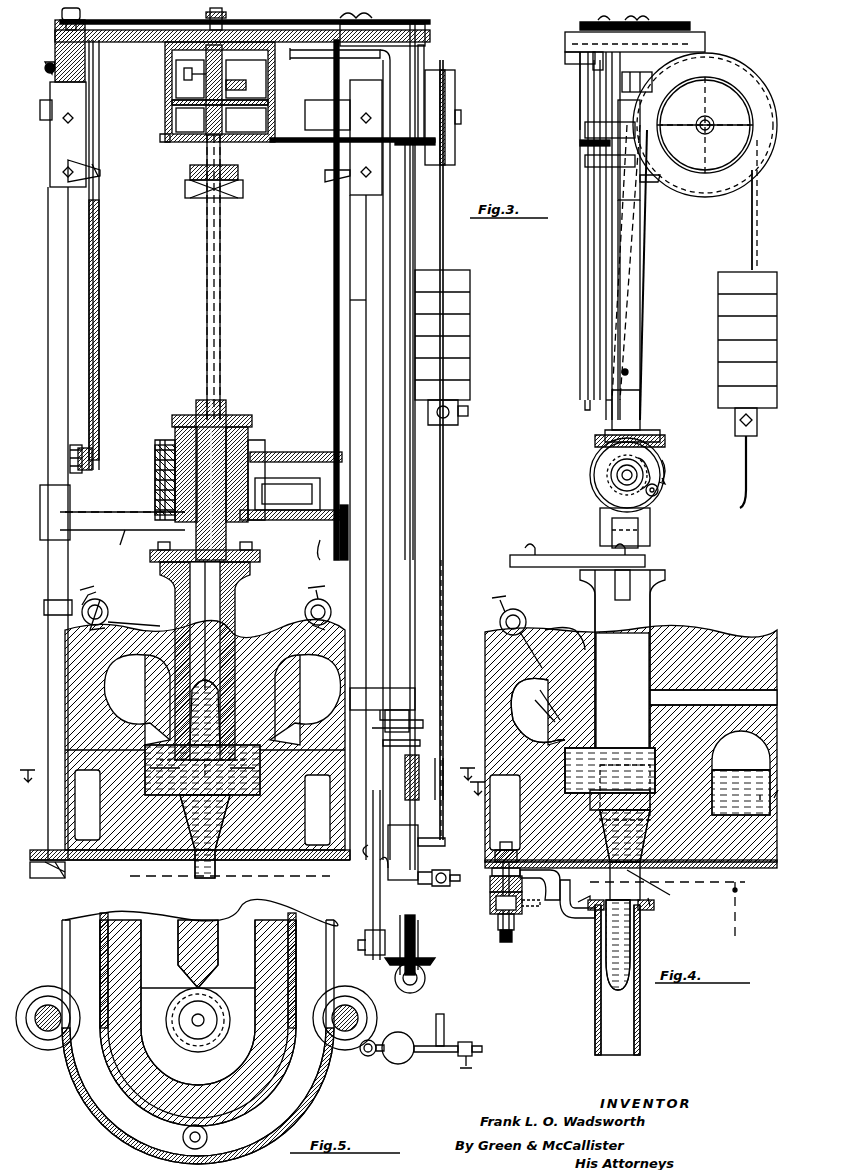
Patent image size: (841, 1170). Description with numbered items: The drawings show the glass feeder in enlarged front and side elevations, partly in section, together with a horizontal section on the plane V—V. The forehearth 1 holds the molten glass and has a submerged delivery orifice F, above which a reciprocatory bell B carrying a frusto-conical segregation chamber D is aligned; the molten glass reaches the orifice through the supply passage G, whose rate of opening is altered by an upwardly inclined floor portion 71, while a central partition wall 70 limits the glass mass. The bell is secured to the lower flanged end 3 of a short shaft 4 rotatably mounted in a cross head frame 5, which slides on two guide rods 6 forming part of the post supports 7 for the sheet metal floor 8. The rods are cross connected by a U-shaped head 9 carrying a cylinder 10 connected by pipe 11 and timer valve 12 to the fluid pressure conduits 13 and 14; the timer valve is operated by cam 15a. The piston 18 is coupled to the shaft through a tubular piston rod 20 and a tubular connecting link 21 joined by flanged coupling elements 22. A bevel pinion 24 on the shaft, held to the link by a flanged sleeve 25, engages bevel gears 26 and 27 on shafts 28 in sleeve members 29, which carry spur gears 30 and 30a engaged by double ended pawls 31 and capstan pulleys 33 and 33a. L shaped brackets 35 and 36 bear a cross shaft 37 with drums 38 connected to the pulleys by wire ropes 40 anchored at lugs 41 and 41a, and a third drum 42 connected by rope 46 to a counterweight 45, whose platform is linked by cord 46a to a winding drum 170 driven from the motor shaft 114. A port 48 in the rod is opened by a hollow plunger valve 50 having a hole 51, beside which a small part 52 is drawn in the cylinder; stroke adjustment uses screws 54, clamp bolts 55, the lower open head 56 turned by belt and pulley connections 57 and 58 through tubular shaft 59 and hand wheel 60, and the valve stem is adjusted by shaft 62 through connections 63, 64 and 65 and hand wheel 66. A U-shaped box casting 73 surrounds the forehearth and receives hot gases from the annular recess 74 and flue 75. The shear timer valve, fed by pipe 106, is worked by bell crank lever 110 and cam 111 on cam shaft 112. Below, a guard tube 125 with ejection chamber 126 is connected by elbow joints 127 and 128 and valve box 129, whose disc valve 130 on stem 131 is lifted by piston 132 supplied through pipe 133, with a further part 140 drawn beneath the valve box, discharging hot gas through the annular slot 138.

In FIG. 3, the forehearth 1 is at (65, 700).
In FIG. 4, the forehearth 1 is at (485, 713).
In FIG. 3, the lower flanged end 3 is at (260, 556).
In FIG. 4, the lower flanged end 3 is at (510, 560).
In FIG. 3, the short shaft 4 is at (190, 522).
In FIG. 3, the cross head frame 5 is at (125, 533).
In FIG. 4, the cross head frame 5 is at (650, 525).
In FIG. 3, the guide rod 6 is at (350, 350).
In FIG. 4, the guide rod 6 is at (630, 305).
In FIG. 3, the post support 7 is at (40, 878).
In FIG. 5, the post support 7 is at (45, 1030).
In FIG. 3, the sheet metal floor 8 is at (125, 868).
In FIG. 4, the sheet metal floor 8 is at (760, 868).
In FIG. 3, the U-shaped head 9 is at (55, 36).
In FIG. 4, the U-shaped head 9 is at (565, 58).
In FIG. 3, the cylinder 10 is at (165, 72).
In FIG. 4, the cylinder 10 is at (580, 85).
In FIG. 3, the pipe 11 is at (312, 62).
In FIG. 5, the pipe 11 is at (368, 1056).
In FIG. 4, the pipe 11 is at (606, 232).
In FIG. 3, the timer valve 12 is at (418, 855).
In FIG. 5, the timer valve 12 is at (398, 1064).
In FIG. 3, the fluid pressure conduit 13 is at (432, 836).
In FIG. 5, the fluid pressure conduit 13 is at (482, 1046).
In FIG. 3, the fluid pressure conduit 14 is at (430, 886).
In FIG. 5, the fluid pressure conduit 14 is at (438, 1054).
In FIG. 3, the cam 15a is at (403, 970).
In FIG. 3, the piston 18 is at (246, 60).
In FIG. 3, the tubular piston rod 20 is at (246, 120).
In FIG. 3, the tubular connecting link 21 is at (221, 230).
In FIG. 4, the tubular connecting link 21 is at (630, 372).
In FIG. 3, the flanged coupling elements 22 is at (185, 190).
In FIG. 3, the bevel pinion 24 is at (245, 418).
In FIG. 4, the bevel pinion 24 is at (598, 445).
In FIG. 3, the flanged sleeve 25 is at (196, 405).
In FIG. 4, the flanged sleeve 25 is at (640, 400).
In FIG. 3, the bevel gear 26 is at (248, 435).
In FIG. 4, the bevel gear 26 is at (592, 462).
In FIG. 3, the bevel gear 27 is at (175, 430).
In FIG. 3, the shaft 28 is at (70, 458).
In FIG. 4, the shaft 28 is at (616, 486).
In FIG. 3, the sleeve member 29 is at (300, 452).
In FIG. 3, the spur gear 30 is at (260, 520).
In FIG. 4, the spur gear 30 is at (620, 478).
In FIG. 3, the spur gear 30a is at (155, 448).
In FIG. 4, the double ended pawl 31 is at (658, 490).
In FIG. 3, the capstan pulley 33 is at (334, 530).
In FIG. 4, the capstan pulley 33 is at (607, 475).
In FIG. 3, the capstan pulley 33a is at (78, 470).
In FIG. 3, the L shaped bracket 35 is at (355, 190).
In FIG. 4, the L shaped bracket 35 is at (650, 190).
In FIG. 3, the L shaped bracket 36 is at (50, 152).
In FIG. 3, the cross shaft 37 is at (40, 108).
In FIG. 4, the cross shaft 37 is at (710, 118).
In FIG. 3, the drum 38 is at (100, 150).
In FIG. 4, the drum 38 is at (735, 58).
In FIG. 3, the wire rope 40 is at (334, 311).
In FIG. 4, the wire rope 40 is at (645, 275).
In FIG. 3, the lug 41 is at (325, 176).
In FIG. 4, the lug 41 is at (655, 182).
In FIG. 3, the lug 41a is at (100, 173).
In FIG. 3, the third drum 42 is at (455, 92).
In FIG. 4, the third drum 42 is at (740, 112).
In FIG. 3, the counterweight 45 is at (470, 305).
In FIG. 4, the counterweight 45 is at (718, 335).
In FIG. 3, the rope 46 is at (443, 237).
In FIG. 4, the rope 46 is at (752, 215).
In FIG. 3, the cord 46a is at (443, 525).
In FIG. 4, the cord 46a is at (740, 508).
In FIG. 3, the port 48 is at (189, 81).
In FIG. 3, the hollow plunger valve 50 is at (222, 98).
In FIG. 3, the hole 51 is at (190, 120).
In FIG. 3, the stem 52 is at (184, 74).
In FIG. 3, the screw 54 is at (62, 14).
In FIG. 4, the screw 54 is at (680, 24).
In FIG. 3, the clamp bolt 55 is at (45, 66).
In FIG. 4, the clamp bolt 55 is at (652, 82).
In FIG. 3, the lower open head 56 is at (165, 142).
In FIG. 3, the belt connection 57 is at (290, 144).
In FIG. 4, the belt connection 57 is at (585, 162).
In FIG. 3, the pulley connection 58 is at (404, 150).
In FIG. 4, the pulley connection 58 is at (580, 135).
In FIG. 3, the tubular shaft 59 is at (412, 505).
In FIG. 4, the tubular shaft 59 is at (588, 312).
In FIG. 3, the hand wheel 60 is at (420, 708).
In FIG. 3, the shaft 62 is at (424, 65).
In FIG. 4, the shaft 62 is at (594, 106).
In FIG. 3, the belt connection 63 is at (430, 22).
In FIG. 4, the belt connection 63 is at (580, 26).
In FIG. 3, the pulley connection 64 is at (208, 17).
In FIG. 3, the pulley connection 65 is at (425, 40).
In FIG. 4, the pulley connection 65 is at (565, 40).
In FIG. 3, the hand wheel 66 is at (407, 728).
In FIG. 5, the central partition wall 70 is at (201, 1012).
In FIG. 4, the central partition wall 70 is at (732, 765).
In FIG. 5, the upwardly inclined portion 71 is at (160, 988).
In FIG. 4, the upwardly inclined portion 71 is at (640, 795).
In FIG. 3, the U-shaped box casting 73 is at (75, 810).
In FIG. 5, the U-shaped box casting 73 is at (90, 1106).
In FIG. 4, the U-shaped box casting 73 is at (524, 812).
In FIG. 3, the annular recess 74 is at (155, 632).
In FIG. 4, the annular recess 74 is at (560, 628).
In FIG. 4, the flue 75 is at (730, 660).
In FIG. 5, the pipe 106 is at (444, 1030).
In FIG. 3, the bell crank lever 110 is at (373, 900).
In FIG. 3, the cam 111 is at (365, 955).
In FIG. 3, the cam shaft 112 is at (418, 940).
In FIG. 3, the motor shaft 114 is at (425, 978).
In FIG. 4, the guard tube 125 is at (595, 972).
In FIG. 4, the ejection chamber 126 is at (590, 912).
In FIG. 4, the elbow pipe joint 127 is at (572, 918).
In FIG. 4, the elbow pipe joint 128 is at (560, 878).
In FIG. 4, the valve box 129 is at (490, 886).
In FIG. 5, the disc valve 130 is at (183, 1137).
In FIG. 4, the disc valve 130 is at (506, 842).
In FIG. 4, the stem 131 is at (492, 872).
In FIG. 4, the piston 132 is at (490, 905).
In FIG. 4, the pipe 133 is at (536, 895).
In FIG. 4, the annular slot 138 is at (620, 945).
In FIG. 4, the valve 140 is at (514, 925).
In FIG. 3, the winding drum 170 is at (440, 764).
In FIG. 3, the valve A is at (205, 606).
In FIG. 4, the valve A is at (517, 627).
In FIG. 3, the bell B is at (235, 600).
In FIG. 4, the bell B is at (650, 612).
In FIG. 3, the chamber C is at (155, 725).
In FIG. 5, the chamber C is at (237, 975).
In FIG. 4, the chamber C is at (577, 733).
In FIG. 3, the segregation chamber D is at (205, 712).
In FIG. 3, the delivery orifice F is at (205, 836).
In FIG. 5, the delivery orifice F is at (198, 1014).
In FIG. 4, the delivery orifice F is at (642, 856).
In FIG. 3, the supply passage G is at (202, 767).
In FIG. 4, the supply passage G is at (610, 784).
In FIG. 3, the section plane V is at (244, 768).
In FIG. 4, the section plane V is at (624, 789).